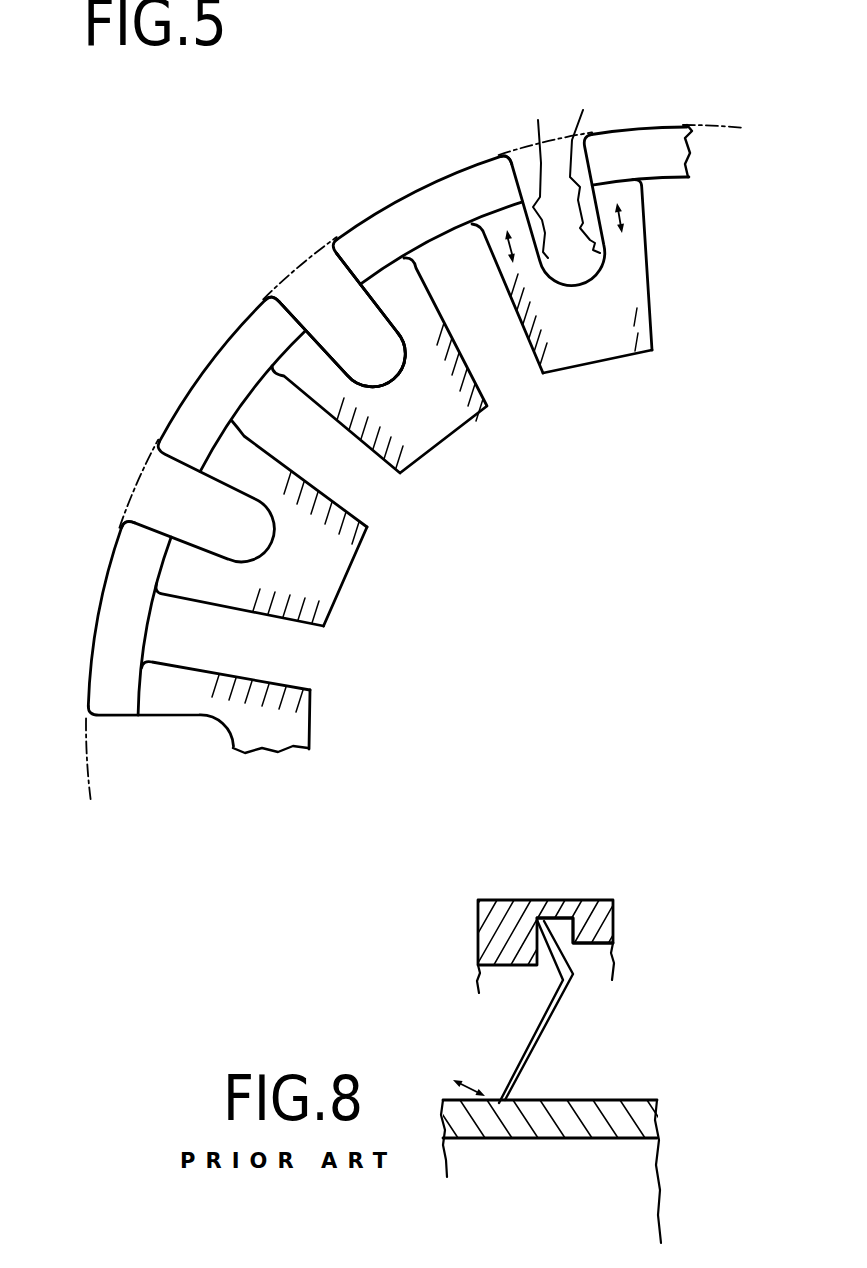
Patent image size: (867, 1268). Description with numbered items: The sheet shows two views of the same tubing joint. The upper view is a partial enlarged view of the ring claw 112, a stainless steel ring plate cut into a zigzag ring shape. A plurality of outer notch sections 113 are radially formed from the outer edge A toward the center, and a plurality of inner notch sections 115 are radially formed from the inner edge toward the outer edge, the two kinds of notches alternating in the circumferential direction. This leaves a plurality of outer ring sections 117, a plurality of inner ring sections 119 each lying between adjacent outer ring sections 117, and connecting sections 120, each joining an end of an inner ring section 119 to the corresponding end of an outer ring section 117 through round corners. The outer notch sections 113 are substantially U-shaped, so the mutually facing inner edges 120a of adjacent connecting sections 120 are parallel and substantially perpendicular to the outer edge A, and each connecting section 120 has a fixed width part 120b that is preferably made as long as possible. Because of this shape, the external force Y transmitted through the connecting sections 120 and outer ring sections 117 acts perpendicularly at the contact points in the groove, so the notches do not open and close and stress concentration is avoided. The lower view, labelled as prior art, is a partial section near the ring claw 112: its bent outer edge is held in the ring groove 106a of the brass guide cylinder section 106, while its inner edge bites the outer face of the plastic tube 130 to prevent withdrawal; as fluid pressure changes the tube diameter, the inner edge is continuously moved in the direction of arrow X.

In FIG. 5, the outer notch section 113 is at (313, 282).
In FIG. 5, the inner notch section 115 is at (510, 380).
In FIG. 5, the outer ring section 117 is at (477, 172).
In FIG. 5, the inner ring section 119 is at (437, 427).
In FIG. 5, the connecting section 120 is at (310, 368).
In FIG. 5, the inner edge of connecting section 120a is at (300, 279).
In FIG. 5, the fixed width part 120b is at (538, 120).
In FIG. 5, the outer edge of the ring claw A is at (741, 126).
In FIG. 5, the external force Y is at (623, 223).
In FIG. 8, the guide cylinder section 106 is at (512, 905).
In FIG. 8, the ring groove 106a is at (575, 919).
In FIG. 8, the ring claw 112 is at (553, 1030).
In FIG. 8, the tube 130 is at (647, 1120).
In FIG. 8, the direction of movement of the inner edge (arrow X) X is at (470, 1080).